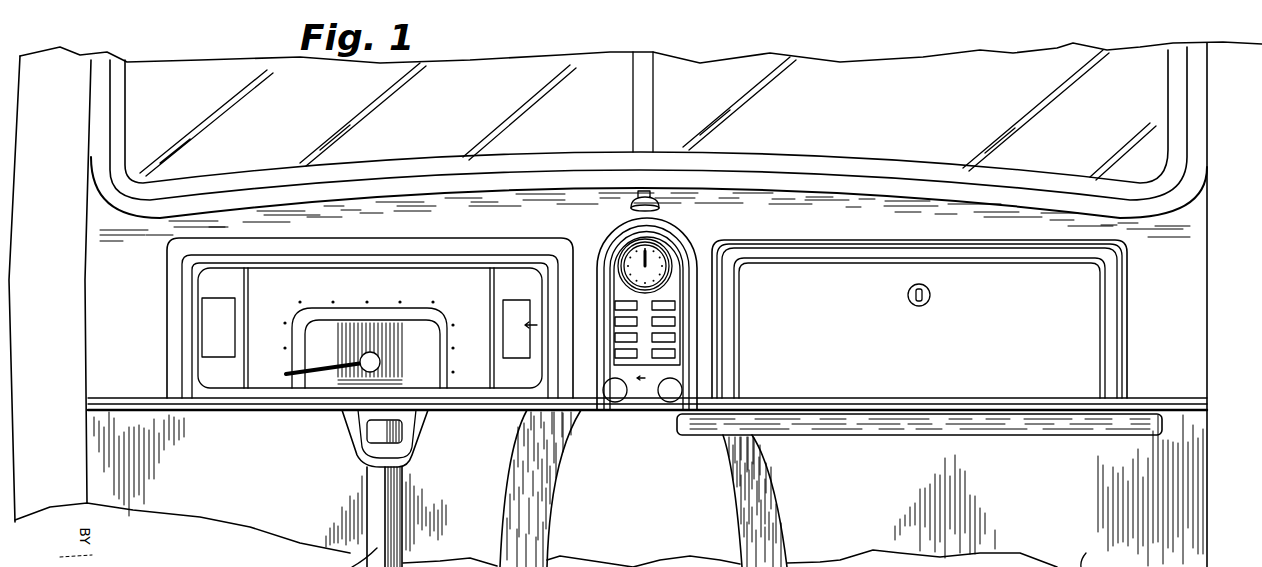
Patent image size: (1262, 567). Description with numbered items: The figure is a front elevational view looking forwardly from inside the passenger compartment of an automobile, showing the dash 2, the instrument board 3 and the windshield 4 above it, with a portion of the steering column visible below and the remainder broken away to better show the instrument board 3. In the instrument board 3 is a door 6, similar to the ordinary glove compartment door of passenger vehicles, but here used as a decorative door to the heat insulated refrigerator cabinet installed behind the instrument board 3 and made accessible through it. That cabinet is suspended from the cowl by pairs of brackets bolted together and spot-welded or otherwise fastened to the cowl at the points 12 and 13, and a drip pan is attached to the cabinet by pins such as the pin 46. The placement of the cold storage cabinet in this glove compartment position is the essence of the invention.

The dash 2 is at (648, 489).
The instrument board 3 is at (647, 300).
The windshield 4 is at (1148, 60).
The door 6 is at (823, 388).
The spot-welded fastening 12 is at (524, 488).
The spot-welded fastening 13 is at (623, 488).
The pin 46 is at (1123, 441).